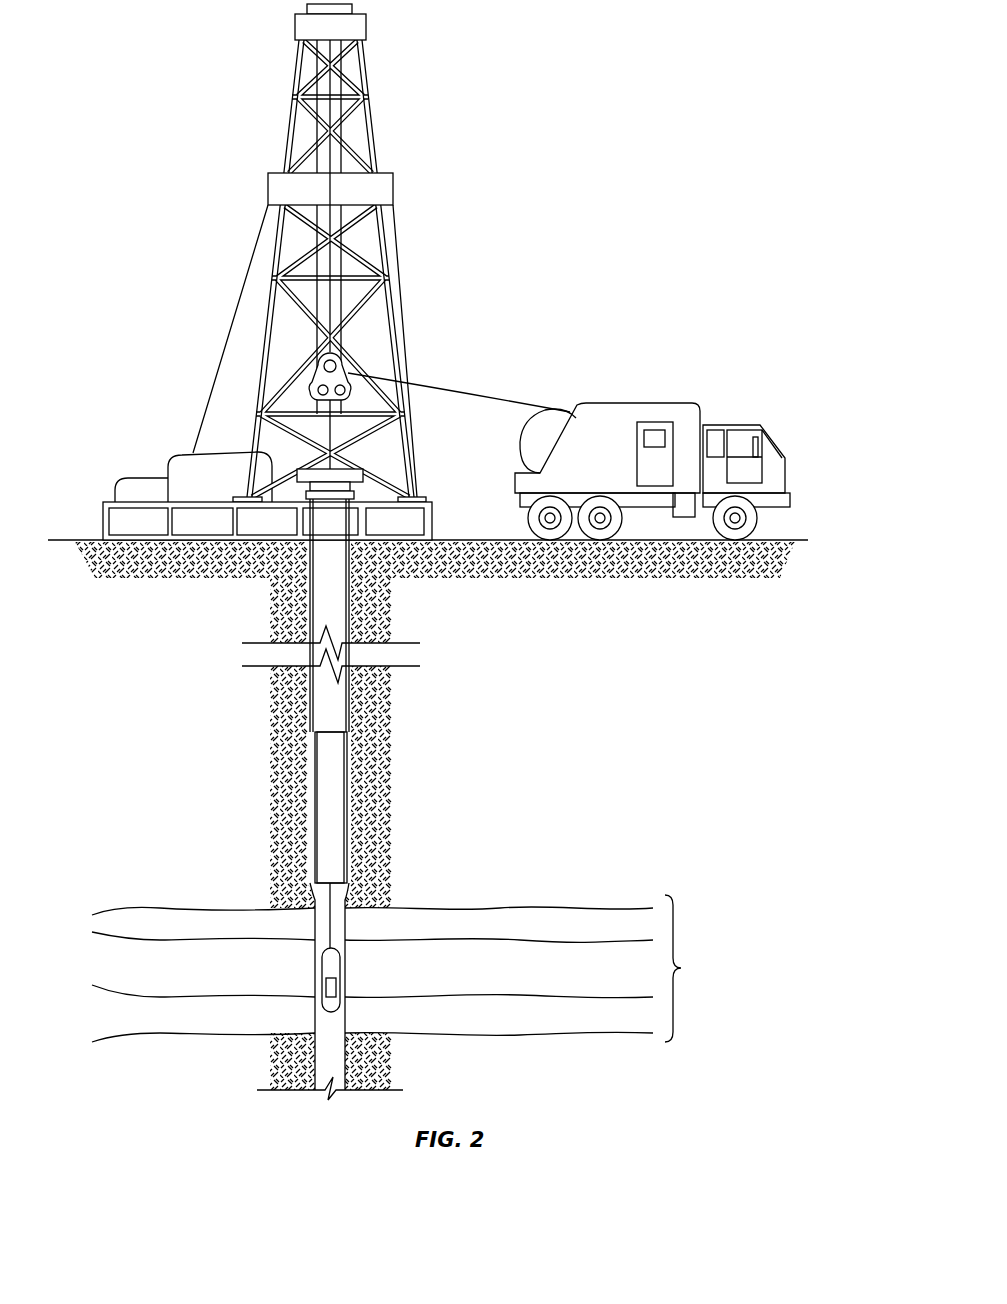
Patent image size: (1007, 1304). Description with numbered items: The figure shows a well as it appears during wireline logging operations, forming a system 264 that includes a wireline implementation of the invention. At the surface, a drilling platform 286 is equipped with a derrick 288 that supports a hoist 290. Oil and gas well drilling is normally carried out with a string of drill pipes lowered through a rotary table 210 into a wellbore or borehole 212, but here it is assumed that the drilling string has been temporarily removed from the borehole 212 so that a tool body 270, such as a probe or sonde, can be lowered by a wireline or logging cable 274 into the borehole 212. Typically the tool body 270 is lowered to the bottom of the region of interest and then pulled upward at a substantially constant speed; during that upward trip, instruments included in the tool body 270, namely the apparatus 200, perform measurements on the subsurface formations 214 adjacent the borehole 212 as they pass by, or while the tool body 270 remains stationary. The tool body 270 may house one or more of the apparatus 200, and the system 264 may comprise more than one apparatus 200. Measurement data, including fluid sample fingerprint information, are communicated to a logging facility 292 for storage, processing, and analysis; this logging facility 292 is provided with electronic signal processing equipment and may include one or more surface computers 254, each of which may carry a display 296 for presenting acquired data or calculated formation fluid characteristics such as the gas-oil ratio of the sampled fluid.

The system 264 is at (530, 261).
The derrick 288 is at (409, 480).
The hoist 290 is at (312, 375).
The wireline or logging cable 274 is at (452, 388).
The rotary table 210 is at (363, 477).
The drilling platform 286 is at (432, 525).
The logging facility 292 is at (637, 404).
The surface computer 254 is at (637, 470).
The display 296 is at (637, 432).
The borehole 212 is at (315, 928).
The tool body 270 is at (338, 963).
The apparatus 200 is at (337, 990).
The subsurface formations 214 is at (413, 968).